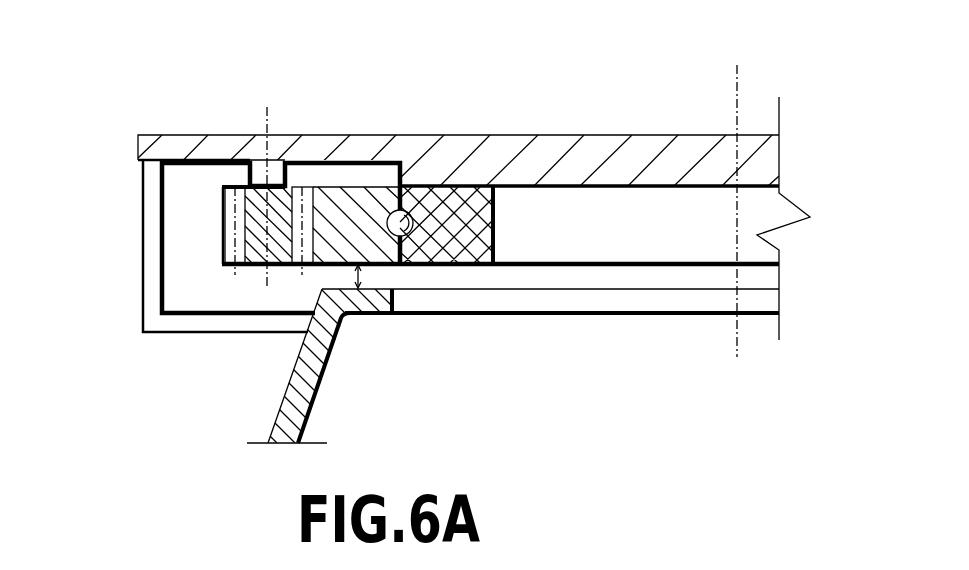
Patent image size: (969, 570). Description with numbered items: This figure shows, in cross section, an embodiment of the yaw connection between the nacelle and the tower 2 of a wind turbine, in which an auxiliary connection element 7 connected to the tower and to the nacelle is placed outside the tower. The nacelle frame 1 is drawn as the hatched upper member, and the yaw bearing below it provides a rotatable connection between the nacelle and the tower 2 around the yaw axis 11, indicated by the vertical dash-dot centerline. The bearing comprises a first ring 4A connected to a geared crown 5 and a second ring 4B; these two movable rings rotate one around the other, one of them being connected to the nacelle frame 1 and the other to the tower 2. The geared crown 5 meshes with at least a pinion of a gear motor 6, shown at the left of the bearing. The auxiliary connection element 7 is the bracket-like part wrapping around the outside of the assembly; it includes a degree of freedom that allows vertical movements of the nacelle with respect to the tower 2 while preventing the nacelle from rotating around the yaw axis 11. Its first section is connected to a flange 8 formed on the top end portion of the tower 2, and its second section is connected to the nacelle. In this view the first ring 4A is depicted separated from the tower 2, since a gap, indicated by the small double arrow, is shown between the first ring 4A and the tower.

The nacelle frame 1 is at (562, 158).
The tower 2 is at (305, 392).
The first ring 4A is at (352, 200).
The second ring 4B is at (447, 207).
The geared crown 5 is at (304, 190).
The gear motor 6 is at (242, 200).
The auxiliary connection element 7 is at (150, 232).
The flange 8 is at (376, 300).
The yaw axis 11 is at (738, 80).